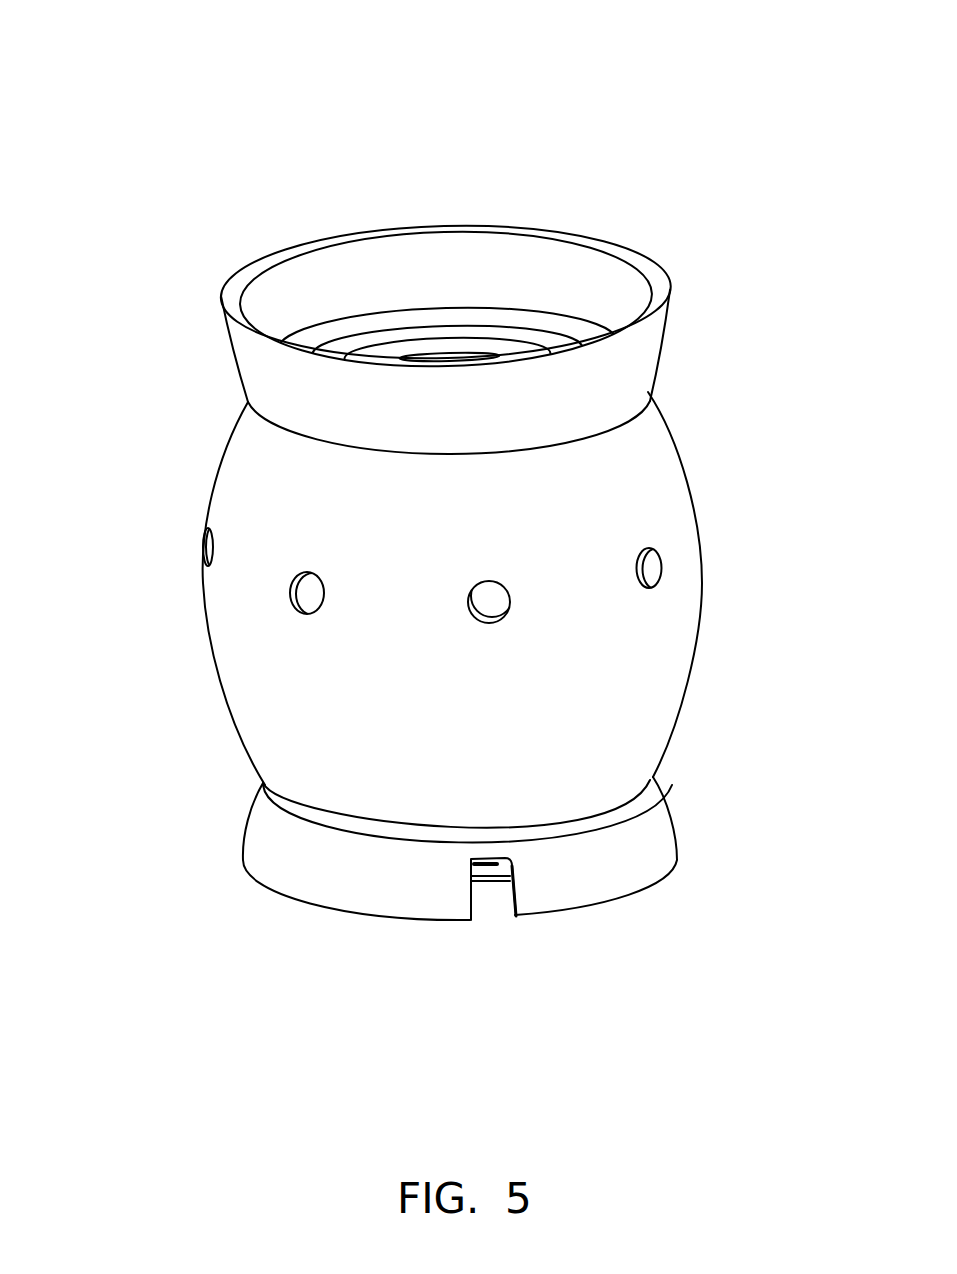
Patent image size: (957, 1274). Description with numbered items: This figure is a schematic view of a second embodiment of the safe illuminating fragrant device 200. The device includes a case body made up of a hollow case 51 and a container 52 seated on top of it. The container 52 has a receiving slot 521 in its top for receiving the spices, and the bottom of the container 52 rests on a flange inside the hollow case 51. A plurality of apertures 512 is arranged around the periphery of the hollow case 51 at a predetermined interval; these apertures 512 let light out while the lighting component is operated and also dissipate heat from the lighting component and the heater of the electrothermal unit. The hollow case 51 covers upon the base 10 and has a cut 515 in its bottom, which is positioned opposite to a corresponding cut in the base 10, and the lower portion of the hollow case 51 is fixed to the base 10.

The safe illuminating fragrant device 200 is at (597, 104).
The container 52 is at (628, 358).
The receiving slot 521 is at (410, 292).
The hollow case 51 is at (633, 708).
The apertures 512 is at (295, 600).
The cut 515 is at (516, 896).
The base 10 is at (495, 888).